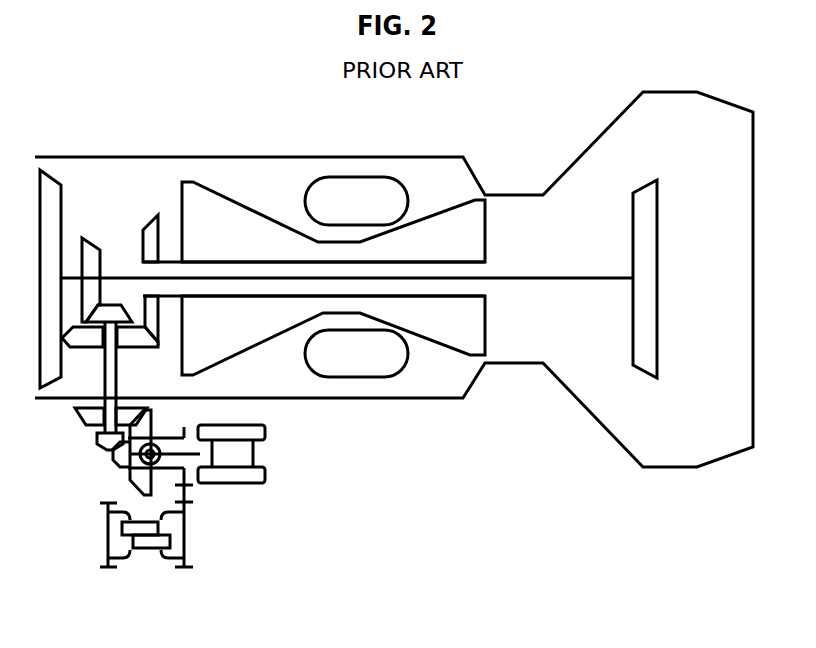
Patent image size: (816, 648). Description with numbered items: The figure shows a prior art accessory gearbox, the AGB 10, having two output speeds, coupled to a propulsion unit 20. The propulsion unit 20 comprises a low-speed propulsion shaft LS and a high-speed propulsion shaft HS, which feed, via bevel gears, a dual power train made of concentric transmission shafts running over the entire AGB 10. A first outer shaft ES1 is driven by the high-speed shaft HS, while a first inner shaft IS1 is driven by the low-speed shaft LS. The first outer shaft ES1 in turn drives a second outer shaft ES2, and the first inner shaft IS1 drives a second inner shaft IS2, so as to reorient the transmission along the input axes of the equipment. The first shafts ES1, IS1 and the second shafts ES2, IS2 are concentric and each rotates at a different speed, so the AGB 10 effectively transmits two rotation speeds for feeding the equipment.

The propulsion unit 20 is at (690, 59).
The AGB 10 is at (78, 543).
The low-speed propulsion shaft LS is at (560, 278).
The high-speed propulsion shaft HS is at (467, 293).
The first inner shaft IS1 is at (126, 312).
The first outer shaft ES1 is at (92, 349).
The second inner shaft IS2 is at (126, 466).
The second outer shaft ES2 is at (130, 478).